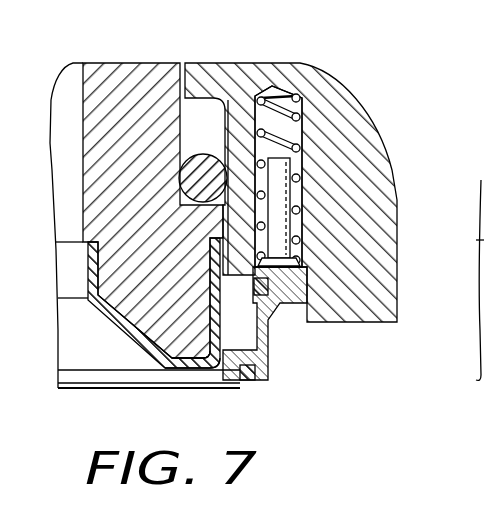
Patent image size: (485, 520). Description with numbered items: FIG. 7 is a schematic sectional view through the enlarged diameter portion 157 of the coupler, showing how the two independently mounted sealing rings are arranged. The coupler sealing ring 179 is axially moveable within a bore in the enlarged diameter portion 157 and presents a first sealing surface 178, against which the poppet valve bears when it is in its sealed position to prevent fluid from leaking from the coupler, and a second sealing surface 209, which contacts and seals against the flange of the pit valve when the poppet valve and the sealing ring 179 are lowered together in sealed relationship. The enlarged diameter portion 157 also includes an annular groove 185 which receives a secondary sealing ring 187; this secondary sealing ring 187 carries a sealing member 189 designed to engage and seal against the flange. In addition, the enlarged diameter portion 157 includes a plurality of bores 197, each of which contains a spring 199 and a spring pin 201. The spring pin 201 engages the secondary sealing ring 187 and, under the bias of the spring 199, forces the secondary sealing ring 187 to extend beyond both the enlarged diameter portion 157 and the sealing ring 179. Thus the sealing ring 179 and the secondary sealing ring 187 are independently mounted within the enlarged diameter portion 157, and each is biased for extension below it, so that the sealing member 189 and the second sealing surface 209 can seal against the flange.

The enlarged diameter portion 157 is at (383, 163).
The coupler sealing ring 179 is at (128, 68).
The annular groove 185 is at (258, 232).
The spring pin 201 is at (312, 196).
The bores 197 is at (298, 127).
The spring 199 is at (302, 100).
The secondary sealing ring 187 is at (270, 345).
The sealing member 189 is at (250, 380).
The first sealing surface 178 is at (110, 318).
The second sealing surface 209 is at (190, 367).